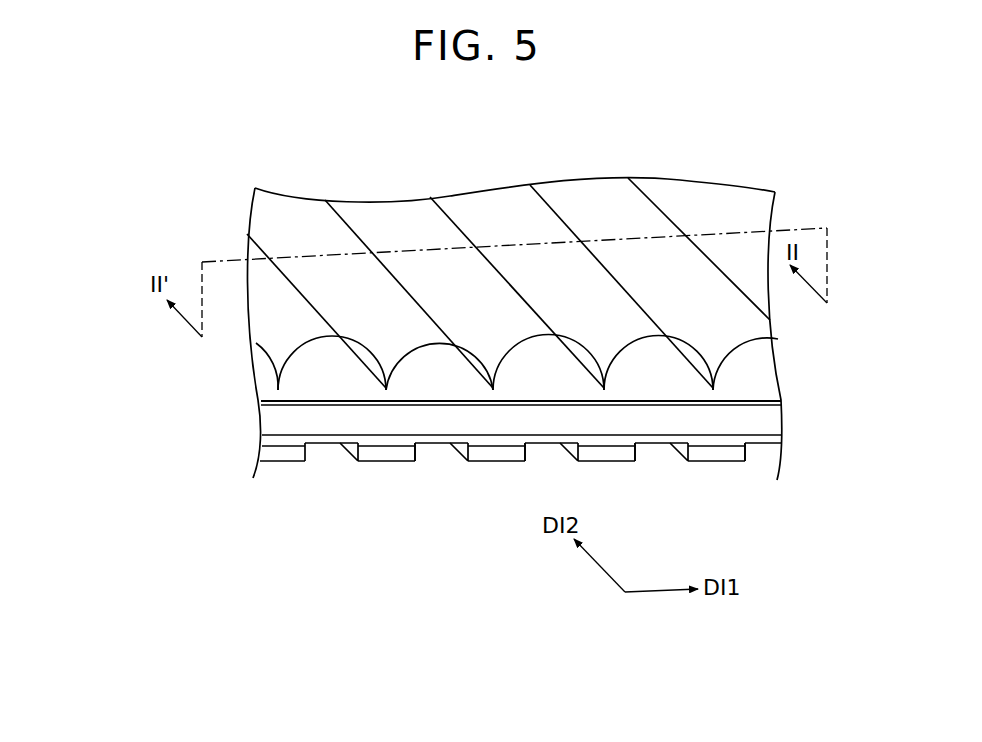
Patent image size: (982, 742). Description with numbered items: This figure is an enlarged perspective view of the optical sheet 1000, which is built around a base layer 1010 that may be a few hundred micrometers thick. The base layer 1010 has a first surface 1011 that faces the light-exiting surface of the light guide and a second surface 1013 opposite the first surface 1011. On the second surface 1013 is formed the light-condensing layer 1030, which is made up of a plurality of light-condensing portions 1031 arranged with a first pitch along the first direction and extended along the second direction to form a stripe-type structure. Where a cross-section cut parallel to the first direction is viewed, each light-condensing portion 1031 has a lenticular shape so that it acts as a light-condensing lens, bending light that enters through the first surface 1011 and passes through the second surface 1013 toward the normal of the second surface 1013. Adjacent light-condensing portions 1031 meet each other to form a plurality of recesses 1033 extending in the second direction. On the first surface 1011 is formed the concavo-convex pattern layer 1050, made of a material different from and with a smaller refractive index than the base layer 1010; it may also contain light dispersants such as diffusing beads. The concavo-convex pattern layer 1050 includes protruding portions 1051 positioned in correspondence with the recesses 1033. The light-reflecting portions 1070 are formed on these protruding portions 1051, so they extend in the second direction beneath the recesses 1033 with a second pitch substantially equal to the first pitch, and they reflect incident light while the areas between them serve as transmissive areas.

The optical sheet 1000 is at (487, 111).
The base layer 1010 is at (121, 394).
The first surface 1011 is at (295, 425).
The second surface 1013 is at (295, 401).
The light-condensing layer 1030 is at (307, 385).
The light-condensing portions 1031 is at (290, 350).
The recesses 1033 is at (716, 389).
The concavo-convex pattern layer 1050 is at (262, 443).
The protruding portions 1051 is at (417, 448).
The light-reflecting portions 1070 is at (388, 457).